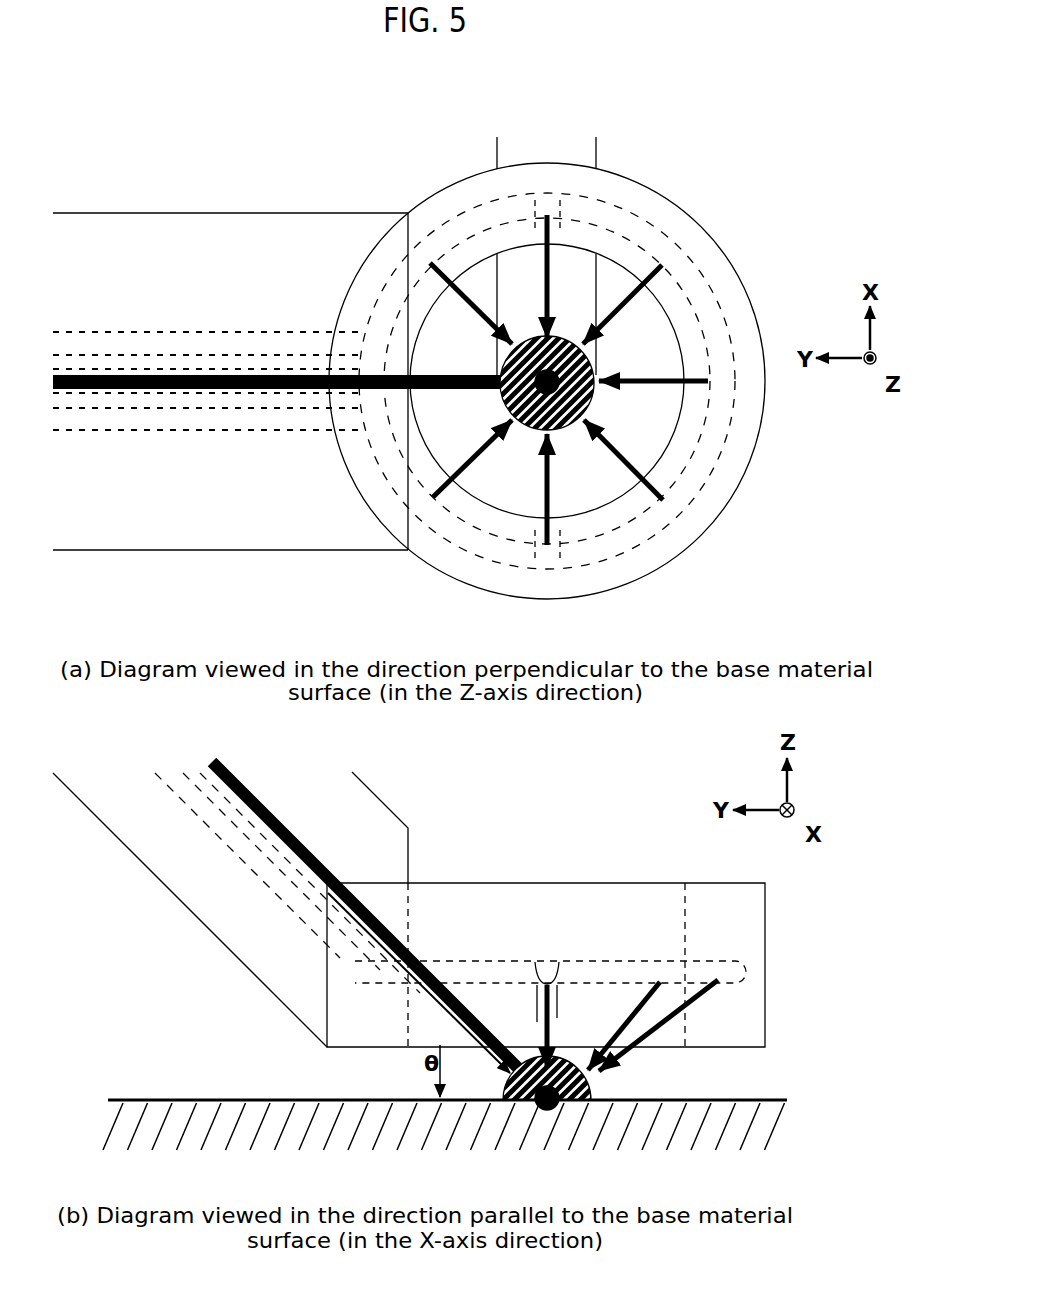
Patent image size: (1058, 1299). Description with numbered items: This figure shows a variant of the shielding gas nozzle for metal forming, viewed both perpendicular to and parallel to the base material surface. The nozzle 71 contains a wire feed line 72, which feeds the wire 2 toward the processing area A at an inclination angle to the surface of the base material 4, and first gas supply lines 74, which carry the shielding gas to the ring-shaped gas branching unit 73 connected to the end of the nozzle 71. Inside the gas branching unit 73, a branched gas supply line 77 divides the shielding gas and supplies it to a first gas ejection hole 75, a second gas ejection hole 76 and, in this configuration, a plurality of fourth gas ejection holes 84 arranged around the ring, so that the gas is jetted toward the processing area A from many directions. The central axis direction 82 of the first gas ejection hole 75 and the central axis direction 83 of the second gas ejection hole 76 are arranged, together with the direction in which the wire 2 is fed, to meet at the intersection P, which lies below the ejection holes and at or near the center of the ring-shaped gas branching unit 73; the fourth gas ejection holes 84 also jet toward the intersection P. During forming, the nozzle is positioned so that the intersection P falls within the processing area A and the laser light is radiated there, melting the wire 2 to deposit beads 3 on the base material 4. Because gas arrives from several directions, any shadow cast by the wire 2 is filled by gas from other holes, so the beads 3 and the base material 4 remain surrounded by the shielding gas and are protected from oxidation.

The wire 2 is at (105, 393).
The beads 3 is at (598, 356).
The base material 4 is at (180, 1117).
The nozzle 71 is at (183, 213).
The wire feed line 72 is at (225, 372).
The gas branching unit 73 is at (728, 495).
The first gas supply lines 74 is at (137, 332).
The first gas ejection hole 75 is at (398, 370).
The second gas ejection hole 76 is at (702, 367).
The branched gas supply line 77 is at (678, 515).
The central axis direction of the first gas ejection hole 82 is at (403, 1012).
The central axis direction of the second gas ejection hole 83 is at (756, 320).
The fourth gas ejection holes 84 is at (452, 272).
The processing area A is at (597, 400).
The intersection P is at (520, 433).